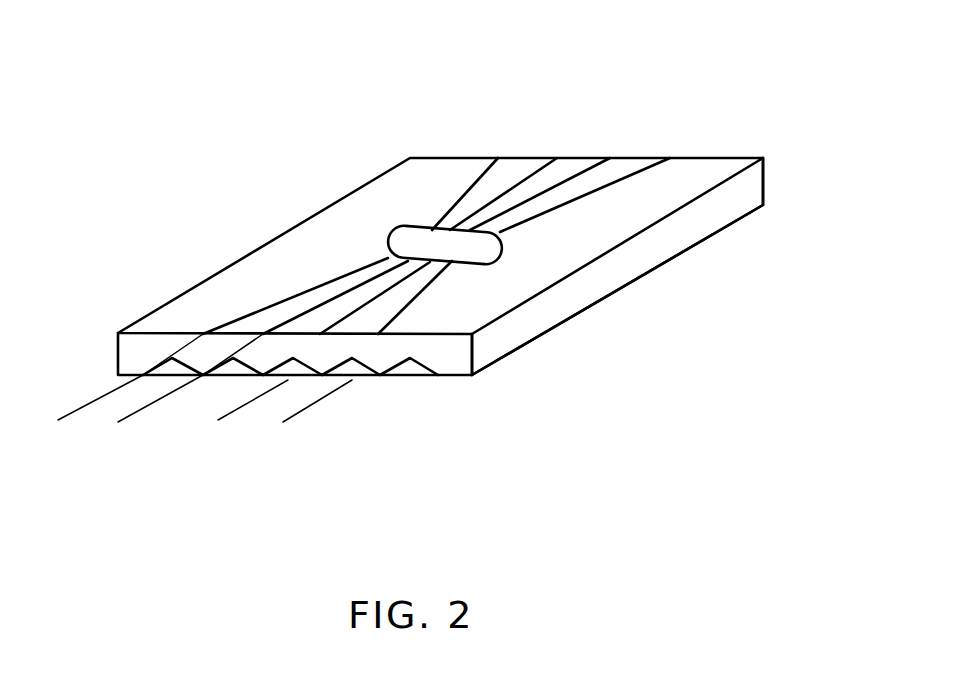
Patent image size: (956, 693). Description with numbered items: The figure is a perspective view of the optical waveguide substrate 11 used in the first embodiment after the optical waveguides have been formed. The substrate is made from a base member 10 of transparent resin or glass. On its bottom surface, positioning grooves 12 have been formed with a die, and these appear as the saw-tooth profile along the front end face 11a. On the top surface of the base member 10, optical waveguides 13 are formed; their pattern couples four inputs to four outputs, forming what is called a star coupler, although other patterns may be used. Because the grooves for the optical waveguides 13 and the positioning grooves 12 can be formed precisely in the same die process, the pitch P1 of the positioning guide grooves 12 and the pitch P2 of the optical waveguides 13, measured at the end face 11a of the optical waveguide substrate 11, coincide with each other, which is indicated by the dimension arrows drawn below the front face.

The base member 10 is at (392, 378).
The optical waveguide substrate 11 is at (452, 157).
The end face 11a is at (766, 176).
The positioning grooves 12 is at (420, 378).
The optical waveguides 13 is at (622, 184).
The pitch of the positioning guide grooves P1 is at (293, 413).
The pitch of the optical waveguides P2 is at (134, 412).